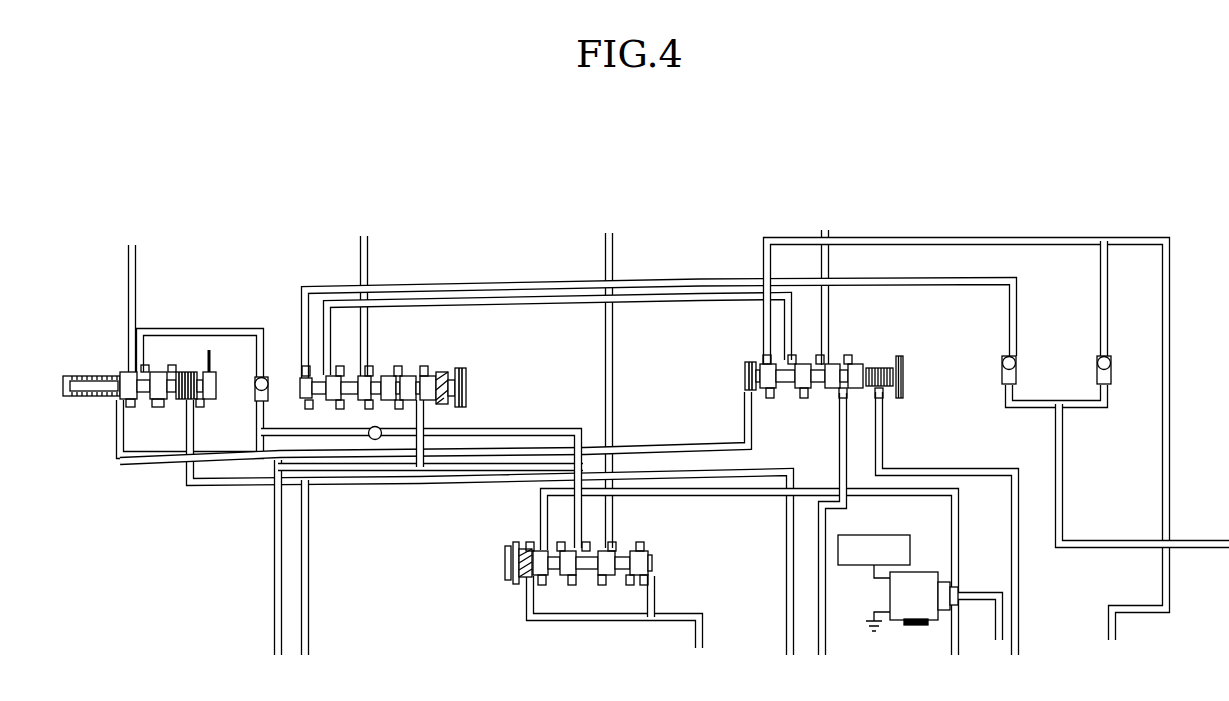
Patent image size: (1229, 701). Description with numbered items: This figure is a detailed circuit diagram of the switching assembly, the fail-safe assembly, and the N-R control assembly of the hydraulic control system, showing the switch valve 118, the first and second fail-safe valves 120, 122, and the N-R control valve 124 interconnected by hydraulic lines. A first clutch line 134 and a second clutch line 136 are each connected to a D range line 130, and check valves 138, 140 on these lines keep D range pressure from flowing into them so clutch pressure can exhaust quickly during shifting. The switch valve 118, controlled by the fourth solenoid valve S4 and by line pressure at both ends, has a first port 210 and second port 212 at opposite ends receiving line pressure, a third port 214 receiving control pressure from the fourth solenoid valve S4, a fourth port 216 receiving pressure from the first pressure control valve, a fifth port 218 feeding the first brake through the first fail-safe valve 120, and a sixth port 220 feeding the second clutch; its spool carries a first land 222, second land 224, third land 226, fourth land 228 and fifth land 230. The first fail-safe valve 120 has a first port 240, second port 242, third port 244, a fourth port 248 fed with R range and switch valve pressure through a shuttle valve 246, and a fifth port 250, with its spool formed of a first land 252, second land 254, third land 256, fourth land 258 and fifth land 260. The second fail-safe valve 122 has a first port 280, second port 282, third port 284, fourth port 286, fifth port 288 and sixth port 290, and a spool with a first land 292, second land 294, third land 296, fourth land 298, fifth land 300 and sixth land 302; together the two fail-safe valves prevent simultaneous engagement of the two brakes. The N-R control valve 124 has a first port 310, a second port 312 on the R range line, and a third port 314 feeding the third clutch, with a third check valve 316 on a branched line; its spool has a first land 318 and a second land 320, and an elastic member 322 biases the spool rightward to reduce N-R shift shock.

The switch valve 118 is at (593, 596).
The first fail-safe valve 120 is at (389, 363).
The second fail-safe valve 122 is at (820, 384).
The N-R control valve 124 is at (127, 376).
The D range line 130 is at (1064, 508).
The first clutch line 134 is at (1171, 459).
The second clutch line 136 is at (613, 282).
The check valve 138 is at (1108, 352).
The check valve 140 is at (1013, 352).
The first port 210 is at (528, 584).
The second port 212 is at (644, 571).
The third port 214 is at (538, 551).
The fourth port 216 is at (596, 586).
The fifth port 218 is at (572, 551).
The sixth port 220 is at (612, 551).
The first land 222 is at (505, 562).
The second land 224 is at (543, 586).
The third land 226 is at (580, 586).
The fourth land 228 is at (604, 586).
The fifth land 230 is at (640, 560).
The first port 240 is at (280, 385).
The second port 242 is at (320, 366).
The third port 244 is at (432, 396).
The shuttle valve 246 is at (376, 440).
The fourth port 248 is at (384, 402).
The fifth port 250 is at (368, 366).
The first land 252 is at (300, 402).
The second land 254 is at (328, 402).
The third land 256 is at (358, 402).
The fourth land 258 is at (408, 402).
The fifth land 260 is at (416, 376).
The first port 280 is at (756, 388).
The second port 282 is at (762, 364).
The third port 284 is at (784, 360).
The fourth port 286 is at (884, 392).
The fifth port 288 is at (843, 400).
The sixth port 290 is at (832, 358).
The first land 292 is at (745, 376).
The second land 294 is at (769, 398).
The third land 296 is at (800, 400).
The fourth land 298 is at (816, 363).
The fifth land 300 is at (854, 364).
The sixth land 302 is at (903, 376).
The first port 310 is at (200, 400).
The second port 312 is at (129, 408).
The third port 314 is at (141, 371).
The third check valve 316 is at (263, 372).
The first land 318 is at (183, 372).
The second land 320 is at (126, 372).
The elastic member 322 is at (62, 392).
The fourth solenoid valve S4 is at (888, 598).